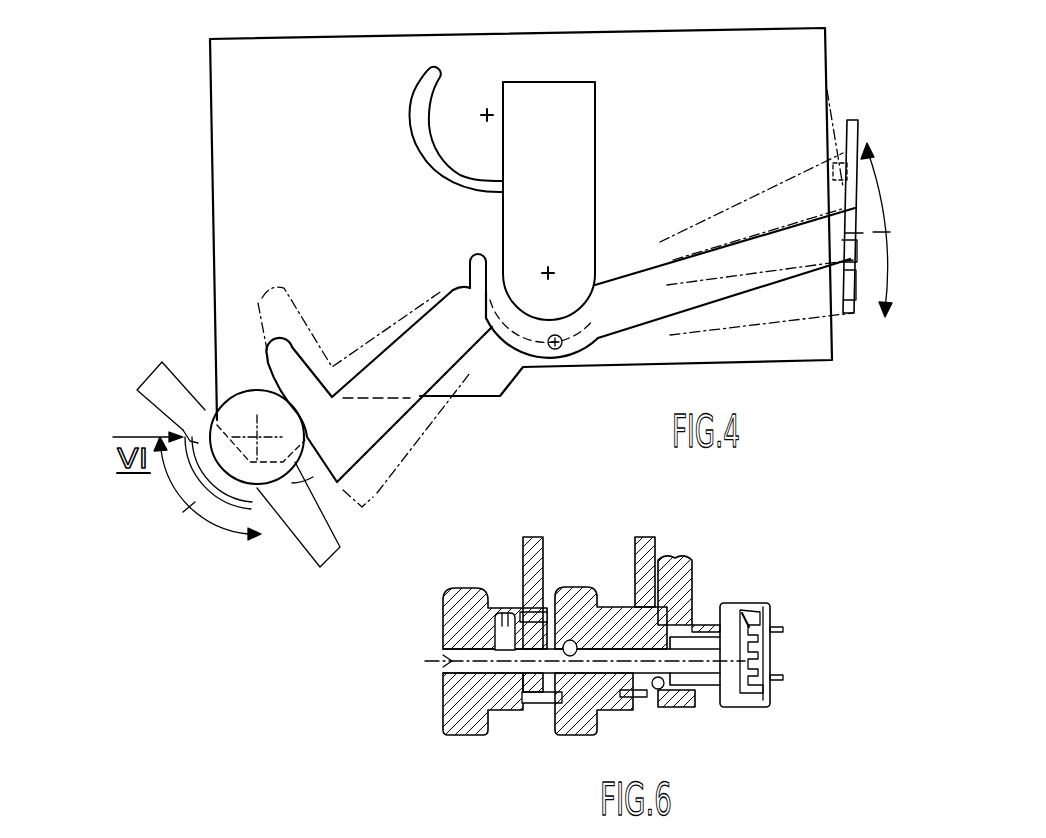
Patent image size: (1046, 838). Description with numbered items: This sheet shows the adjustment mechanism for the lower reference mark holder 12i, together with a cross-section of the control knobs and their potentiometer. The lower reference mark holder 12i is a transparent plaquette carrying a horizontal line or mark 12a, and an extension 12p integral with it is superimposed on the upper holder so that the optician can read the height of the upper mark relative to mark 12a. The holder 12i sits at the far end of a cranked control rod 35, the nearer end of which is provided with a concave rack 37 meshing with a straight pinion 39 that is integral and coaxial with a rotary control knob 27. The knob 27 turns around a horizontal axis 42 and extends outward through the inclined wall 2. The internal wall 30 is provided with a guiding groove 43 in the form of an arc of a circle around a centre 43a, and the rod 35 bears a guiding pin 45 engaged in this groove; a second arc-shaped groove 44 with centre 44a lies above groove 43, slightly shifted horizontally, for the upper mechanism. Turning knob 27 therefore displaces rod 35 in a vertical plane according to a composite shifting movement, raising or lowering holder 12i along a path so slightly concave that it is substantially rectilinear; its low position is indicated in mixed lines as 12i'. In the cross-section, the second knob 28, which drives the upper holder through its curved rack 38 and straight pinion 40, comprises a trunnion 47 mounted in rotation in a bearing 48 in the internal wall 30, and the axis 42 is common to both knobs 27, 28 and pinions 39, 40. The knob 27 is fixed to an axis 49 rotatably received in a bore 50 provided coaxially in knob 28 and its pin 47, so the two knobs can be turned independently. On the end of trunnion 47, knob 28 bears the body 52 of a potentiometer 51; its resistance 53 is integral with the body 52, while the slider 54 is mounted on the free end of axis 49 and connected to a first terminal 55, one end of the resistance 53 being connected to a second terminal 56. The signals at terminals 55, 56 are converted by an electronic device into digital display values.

In FIG. 4, the inclined wall 2 is at (305, 552).
In FIG. 4, the lower reference mark holder 12i is at (871, 301).
In FIG. 4, the low position of lower reference mark holder 12i' is at (564, 260).
In FIG. 4, the extension of lower reference mark holder 12p is at (851, 140).
In FIG. 4, the line or mark of lower reference mark holder 12a is at (862, 226).
In FIG. 4, the rotary control knob 27 is at (292, 484).
In FIG. 6, the rotary control knob 27 is at (460, 717).
In FIG. 6, the rotating control knob 28 is at (570, 717).
In FIG. 4, the internal wall 30 is at (330, 52).
In FIG. 6, the internal wall 30 is at (688, 707).
In FIG. 4, the cranked control wire or rod 35 is at (628, 272).
In FIG. 4, the concave rack 37 is at (268, 377).
In FIG. 6, the concave rack 37 is at (528, 553).
In FIG. 6, the curved rack 38 is at (648, 551).
In FIG. 4, the straight pinion 39 is at (217, 413).
In FIG. 6, the straight pinion 39 is at (533, 704).
In FIG. 6, the straight pinion 40 is at (640, 698).
In FIG. 4, the horizontal geometric axis 42 is at (258, 438).
In FIG. 6, the horizontal geometric axis 42 is at (443, 661).
In FIG. 4, the guiding groove or channel 43 is at (473, 260).
In FIG. 4, the centre of guiding groove 43a is at (548, 268).
In FIG. 4, the guiding groove or channel 44 is at (412, 110).
In FIG. 4, the centre of guiding groove 44a is at (483, 115).
In FIG. 4, the guiding pin or stud 45 is at (555, 350).
In FIG. 6, the pin or trunnion 47 is at (690, 587).
In FIG. 6, the bearing 48 is at (656, 689).
In FIG. 6, the axis 49 is at (607, 657).
In FIG. 6, the bore or boring 50 is at (570, 640).
In FIG. 6, the potentiometer 51 is at (752, 714).
In FIG. 6, the body of potentiometer 52 is at (747, 606).
In FIG. 6, the resistance 53 is at (766, 606).
In FIG. 6, the slider 54 is at (741, 612).
In FIG. 6, the first terminal 55 is at (785, 680).
In FIG. 6, the second terminal 56 is at (783, 630).